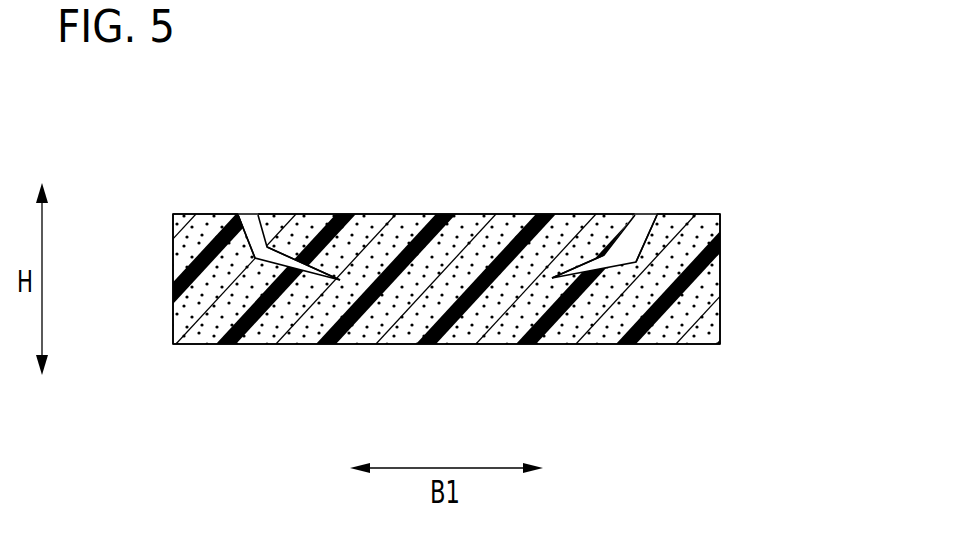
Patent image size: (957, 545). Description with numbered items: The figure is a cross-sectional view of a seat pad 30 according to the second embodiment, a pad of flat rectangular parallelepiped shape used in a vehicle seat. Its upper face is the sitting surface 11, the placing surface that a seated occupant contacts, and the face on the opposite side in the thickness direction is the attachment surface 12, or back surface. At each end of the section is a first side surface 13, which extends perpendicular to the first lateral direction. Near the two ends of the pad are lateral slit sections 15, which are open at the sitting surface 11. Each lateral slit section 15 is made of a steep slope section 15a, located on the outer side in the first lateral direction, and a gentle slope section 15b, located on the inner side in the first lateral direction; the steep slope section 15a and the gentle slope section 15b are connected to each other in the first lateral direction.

The seat pad 30 is at (742, 115).
The sitting surface 11 is at (437, 214).
The attachment surface 12 is at (448, 345).
The first side surface 13 is at (173, 308).
The lateral slit section 15 is at (210, 137).
The steep slope section 15a is at (252, 228).
The gentle slope section 15b is at (292, 263).